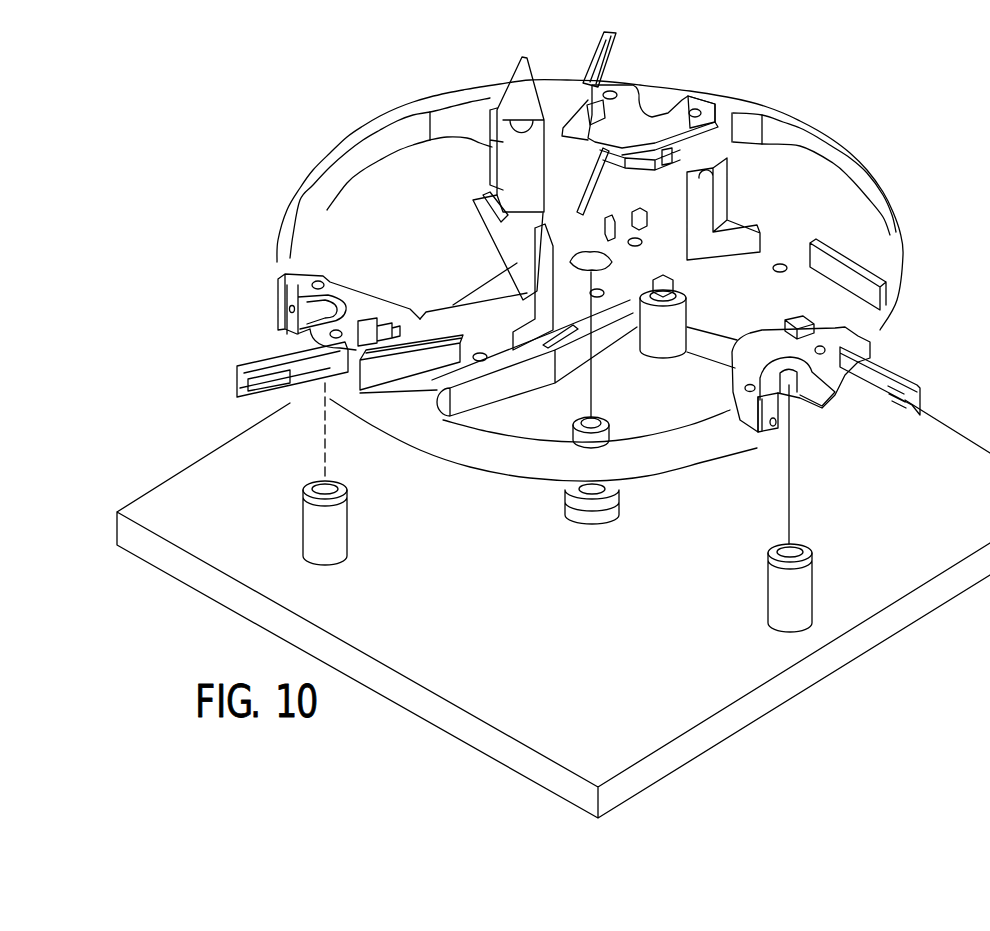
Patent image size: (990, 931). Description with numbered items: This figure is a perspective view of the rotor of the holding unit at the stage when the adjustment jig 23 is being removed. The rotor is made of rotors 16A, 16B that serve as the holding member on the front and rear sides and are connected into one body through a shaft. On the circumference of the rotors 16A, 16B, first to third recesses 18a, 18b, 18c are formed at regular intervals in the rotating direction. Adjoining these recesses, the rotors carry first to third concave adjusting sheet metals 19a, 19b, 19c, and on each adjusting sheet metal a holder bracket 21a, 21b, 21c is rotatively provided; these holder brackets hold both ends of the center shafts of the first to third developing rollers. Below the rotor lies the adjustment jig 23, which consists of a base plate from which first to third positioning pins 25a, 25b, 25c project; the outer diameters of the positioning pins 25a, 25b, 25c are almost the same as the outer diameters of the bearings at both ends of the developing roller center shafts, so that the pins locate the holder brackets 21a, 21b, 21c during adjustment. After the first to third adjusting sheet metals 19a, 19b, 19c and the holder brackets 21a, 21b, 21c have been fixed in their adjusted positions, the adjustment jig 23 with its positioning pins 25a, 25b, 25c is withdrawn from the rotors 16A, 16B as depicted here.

The rotor 16A is at (603, 290).
The rotor 16B is at (825, 139).
The first recess 18a is at (800, 388).
The second recess 18b is at (655, 102).
The third recess 18c is at (282, 277).
The first adjusting sheet metal 19a is at (821, 342).
The second adjusting sheet metal 19b is at (713, 98).
The third adjusting sheet metal 19c is at (317, 343).
The holder bracket 21a is at (893, 367).
The holder bracket 21b is at (619, 46).
The holder bracket 21c is at (240, 387).
The adjustment jig 23 is at (813, 686).
The first positioning pin 25a is at (809, 583).
The second positioning pin 25b is at (664, 346).
The third positioning pin 25c is at (360, 474).